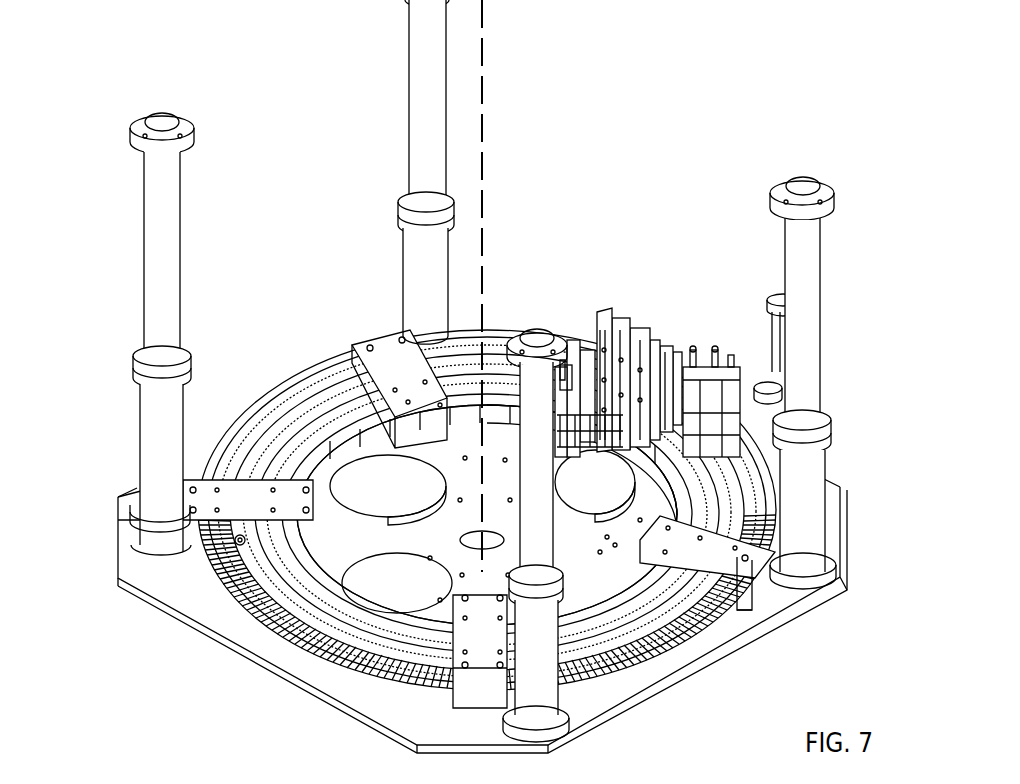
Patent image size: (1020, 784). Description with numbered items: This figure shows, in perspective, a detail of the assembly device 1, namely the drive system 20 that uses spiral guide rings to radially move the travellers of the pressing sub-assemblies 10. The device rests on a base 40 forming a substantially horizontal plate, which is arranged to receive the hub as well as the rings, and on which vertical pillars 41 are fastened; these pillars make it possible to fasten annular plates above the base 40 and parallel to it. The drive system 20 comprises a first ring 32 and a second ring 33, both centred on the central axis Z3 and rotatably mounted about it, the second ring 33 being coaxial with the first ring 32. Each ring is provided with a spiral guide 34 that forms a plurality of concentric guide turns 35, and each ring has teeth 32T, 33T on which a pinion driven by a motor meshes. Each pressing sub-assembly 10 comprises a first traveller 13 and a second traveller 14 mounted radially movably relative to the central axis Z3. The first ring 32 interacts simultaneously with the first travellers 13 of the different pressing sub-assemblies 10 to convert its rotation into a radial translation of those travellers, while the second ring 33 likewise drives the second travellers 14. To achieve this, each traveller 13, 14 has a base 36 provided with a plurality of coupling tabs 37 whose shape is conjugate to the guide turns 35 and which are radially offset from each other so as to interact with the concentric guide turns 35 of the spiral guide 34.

The assembly device 1 is at (724, 77).
The central axis Z3 is at (484, 62).
The pressing sub-assembly 10 is at (616, 300).
The first traveller 13 is at (562, 350).
The second traveller 14 is at (598, 318).
The drive system 20 is at (303, 341).
The first ring 32 is at (218, 588).
The teeth of first ring 32T is at (280, 551).
The second ring 33 is at (243, 620).
The teeth of second ring 33T is at (345, 658).
The spiral guide 34 is at (263, 550).
The concentric guide turns 35 is at (335, 680).
The base of traveller 36 is at (810, 575).
The coupling tabs 37 is at (765, 590).
The base 40 is at (680, 677).
The vertical pillars 41 is at (165, 232).